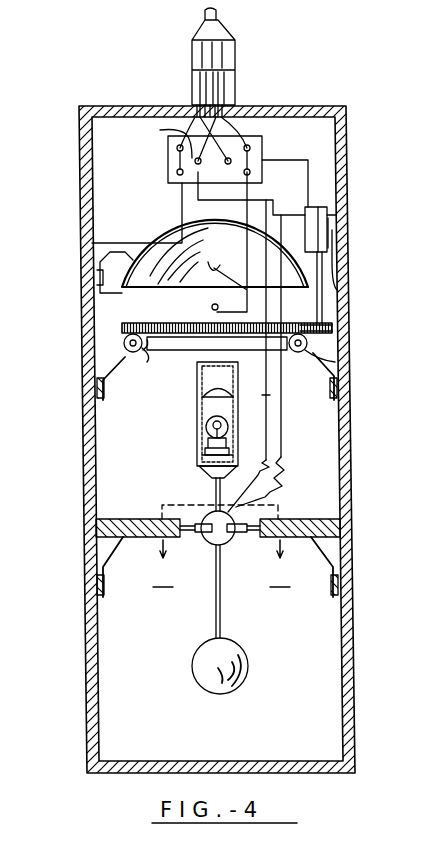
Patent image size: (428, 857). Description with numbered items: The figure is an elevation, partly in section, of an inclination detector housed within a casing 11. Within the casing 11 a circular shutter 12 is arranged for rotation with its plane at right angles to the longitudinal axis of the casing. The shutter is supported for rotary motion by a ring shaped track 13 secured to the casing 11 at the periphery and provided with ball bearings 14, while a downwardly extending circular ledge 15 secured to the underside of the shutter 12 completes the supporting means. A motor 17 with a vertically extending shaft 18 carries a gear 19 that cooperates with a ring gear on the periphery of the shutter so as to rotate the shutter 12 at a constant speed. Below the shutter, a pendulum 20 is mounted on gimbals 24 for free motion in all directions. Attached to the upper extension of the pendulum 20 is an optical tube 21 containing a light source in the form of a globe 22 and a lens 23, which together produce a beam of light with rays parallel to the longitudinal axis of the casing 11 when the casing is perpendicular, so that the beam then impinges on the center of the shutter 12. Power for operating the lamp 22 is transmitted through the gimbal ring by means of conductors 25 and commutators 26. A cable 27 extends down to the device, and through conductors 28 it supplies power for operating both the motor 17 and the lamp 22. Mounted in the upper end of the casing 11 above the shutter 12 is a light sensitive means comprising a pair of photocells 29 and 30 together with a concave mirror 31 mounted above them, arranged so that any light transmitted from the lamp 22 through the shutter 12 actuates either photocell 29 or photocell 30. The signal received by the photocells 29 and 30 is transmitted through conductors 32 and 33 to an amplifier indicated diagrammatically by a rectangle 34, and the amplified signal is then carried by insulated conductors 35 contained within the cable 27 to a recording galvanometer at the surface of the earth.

The casing 11 is at (81, 452).
The circular shutter 12 is at (140, 325).
The ring shaped track 13 is at (337, 346).
The ball bearings 14 is at (128, 352).
The circular ledge 15 is at (150, 346).
The motor 17 is at (345, 215).
The shaft 18 is at (338, 300).
The gear 19 is at (346, 329).
The pendulum 20 is at (193, 662).
The optical tube 21 is at (197, 428).
The globe 22 is at (238, 432).
The lens 23 is at (234, 390).
The gimbals 24 is at (212, 521).
The conductors 25 is at (282, 385).
The commutators 26 is at (283, 462).
The cable 27 is at (203, 14).
The conductors 28 is at (196, 116).
The photocell 29 is at (230, 306).
The photocell 30 is at (232, 270).
The concave mirror 31 is at (183, 233).
The conductor 32 is at (180, 205).
The conductor 33 is at (262, 180).
The amplifier 34 is at (261, 147).
The insulated conductors 35 is at (163, 131).